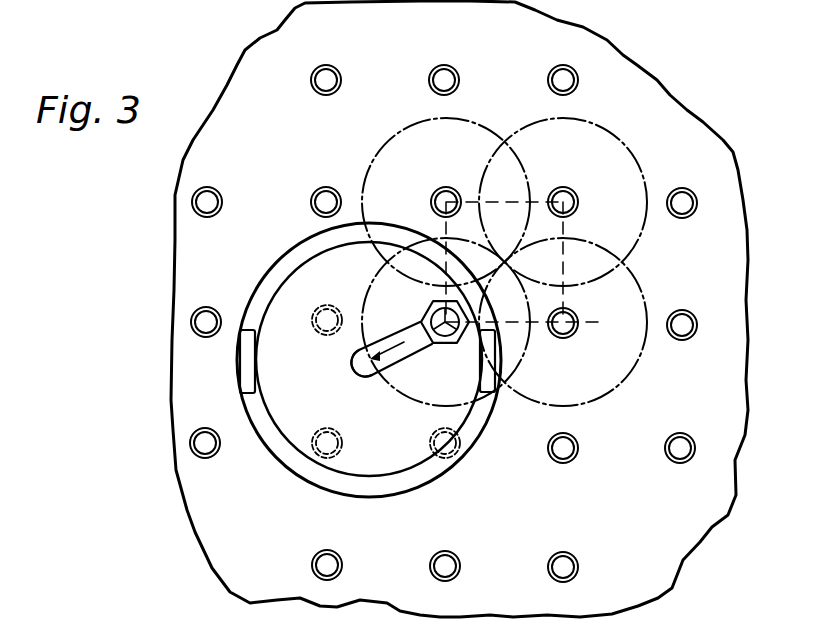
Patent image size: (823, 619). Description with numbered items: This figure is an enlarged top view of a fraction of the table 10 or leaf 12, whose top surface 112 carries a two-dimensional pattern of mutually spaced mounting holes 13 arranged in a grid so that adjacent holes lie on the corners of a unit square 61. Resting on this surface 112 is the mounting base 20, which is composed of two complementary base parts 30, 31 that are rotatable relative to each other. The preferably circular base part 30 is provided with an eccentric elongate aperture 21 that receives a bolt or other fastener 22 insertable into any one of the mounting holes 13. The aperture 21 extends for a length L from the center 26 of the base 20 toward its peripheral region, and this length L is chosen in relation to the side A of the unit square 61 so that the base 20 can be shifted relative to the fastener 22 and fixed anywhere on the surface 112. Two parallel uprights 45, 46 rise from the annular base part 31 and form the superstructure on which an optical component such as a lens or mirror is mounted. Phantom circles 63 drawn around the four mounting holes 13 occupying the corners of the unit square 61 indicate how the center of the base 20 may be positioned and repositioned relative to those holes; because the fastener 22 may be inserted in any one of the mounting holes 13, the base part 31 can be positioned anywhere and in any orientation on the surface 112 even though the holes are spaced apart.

The table 10 is at (251, 84).
The leaf 12 is at (556, 47).
The mounting holes 13 is at (572, 190).
The base 20 is at (257, 274).
The elongate aperture 21 is at (391, 355).
The fastener 22 is at (453, 355).
The center 26 is at (369, 377).
The base part 30 is at (329, 406).
The annular base part 31 is at (390, 497).
The upright 45 is at (243, 360).
The upright 46 is at (500, 357).
The unit square 61 is at (566, 275).
The phantom circles 63 is at (642, 292).
The top surface 112 is at (272, 533).
The side of the unit square A is at (512, 172).
The length of the elongate aperture L is at (400, 360).